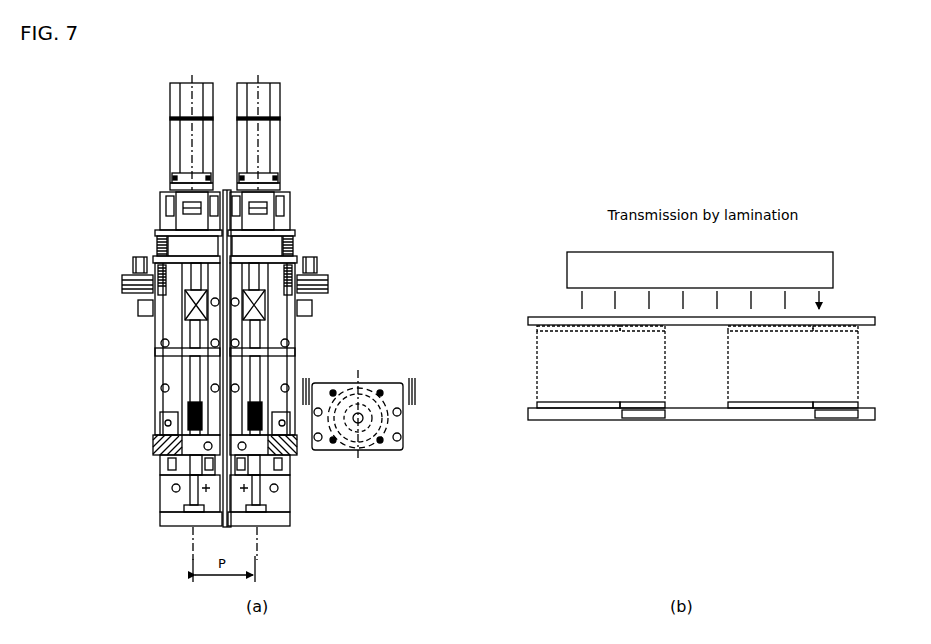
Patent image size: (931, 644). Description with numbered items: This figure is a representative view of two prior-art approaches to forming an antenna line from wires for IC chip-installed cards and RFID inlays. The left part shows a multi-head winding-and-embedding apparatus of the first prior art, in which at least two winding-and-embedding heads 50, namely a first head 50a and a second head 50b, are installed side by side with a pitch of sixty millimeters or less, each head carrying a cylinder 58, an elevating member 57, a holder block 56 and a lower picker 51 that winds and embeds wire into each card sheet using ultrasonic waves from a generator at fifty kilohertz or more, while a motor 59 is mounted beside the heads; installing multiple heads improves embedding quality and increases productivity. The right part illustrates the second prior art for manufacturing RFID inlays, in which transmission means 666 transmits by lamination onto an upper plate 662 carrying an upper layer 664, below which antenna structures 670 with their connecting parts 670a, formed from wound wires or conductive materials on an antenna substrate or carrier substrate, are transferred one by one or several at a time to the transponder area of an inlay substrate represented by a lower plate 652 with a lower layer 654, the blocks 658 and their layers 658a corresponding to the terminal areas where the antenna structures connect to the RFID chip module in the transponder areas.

The transfer unit 50 is at (146, 518).
The first transfer unit 50a is at (149, 178).
The second transfer unit 50b is at (313, 191).
The picker 51 is at (181, 498).
The holder block 56 is at (184, 445).
The elevating member 57 is at (186, 305).
The cylinder 58 is at (288, 152).
The motor 59 is at (337, 381).
The lower plate 652 is at (550, 421).
The lower layer 654 is at (530, 401).
The lower block 658 is at (632, 419).
The lower block layer 658a is at (650, 418).
The upper plate 662 is at (534, 316).
The upper layer 664 is at (529, 331).
The transmission means 666 is at (732, 252).
The electrode 670 is at (575, 335).
The electrode part 670a is at (650, 335).